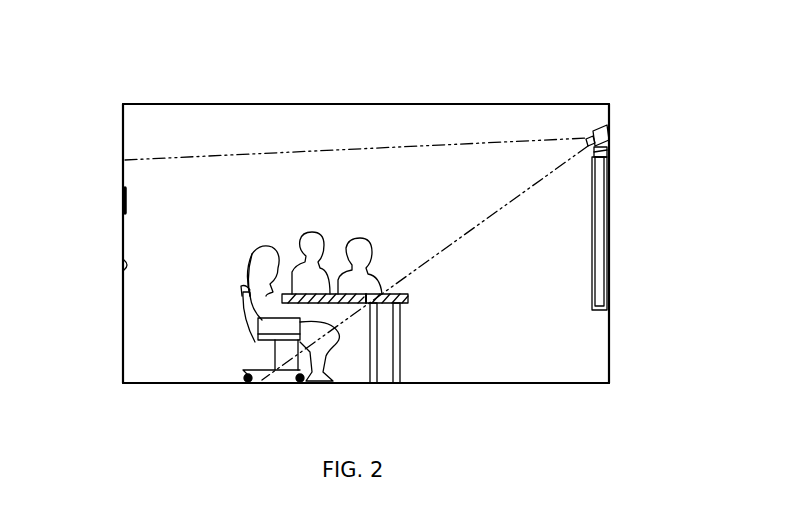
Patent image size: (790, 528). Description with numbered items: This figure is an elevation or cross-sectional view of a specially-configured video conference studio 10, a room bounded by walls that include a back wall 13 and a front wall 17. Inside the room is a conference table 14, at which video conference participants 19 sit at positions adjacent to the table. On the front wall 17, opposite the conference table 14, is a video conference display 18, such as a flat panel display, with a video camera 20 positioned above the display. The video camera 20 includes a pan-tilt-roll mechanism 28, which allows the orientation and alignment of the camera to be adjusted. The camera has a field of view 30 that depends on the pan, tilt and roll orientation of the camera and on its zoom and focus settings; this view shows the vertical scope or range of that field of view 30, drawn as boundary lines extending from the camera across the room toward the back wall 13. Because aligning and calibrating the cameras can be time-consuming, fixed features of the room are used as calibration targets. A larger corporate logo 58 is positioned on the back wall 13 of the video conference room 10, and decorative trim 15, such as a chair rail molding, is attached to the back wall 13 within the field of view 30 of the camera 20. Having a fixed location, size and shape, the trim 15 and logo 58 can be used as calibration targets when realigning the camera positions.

The video conference studio 10 is at (134, 72).
The back wall 13 is at (122, 343).
The conference table 14 is at (407, 298).
The decorative trim 15 is at (127, 265).
The front wall 17 is at (610, 345).
The video conference display 18 is at (597, 258).
The video conference participants 19 is at (358, 243).
The video camera 20 is at (606, 128).
The pan-tilt-roll (PTR) mechanism 28 is at (608, 150).
The field of view 30 is at (478, 142).
The larger corporate logo 58 is at (123, 200).